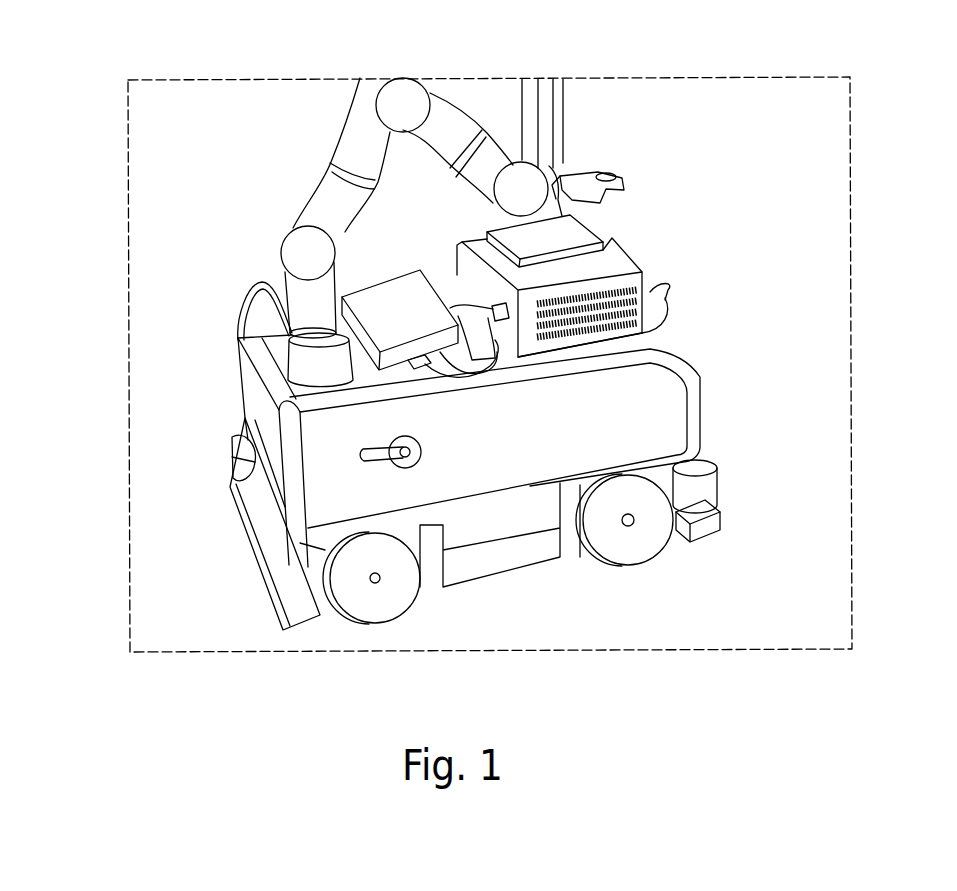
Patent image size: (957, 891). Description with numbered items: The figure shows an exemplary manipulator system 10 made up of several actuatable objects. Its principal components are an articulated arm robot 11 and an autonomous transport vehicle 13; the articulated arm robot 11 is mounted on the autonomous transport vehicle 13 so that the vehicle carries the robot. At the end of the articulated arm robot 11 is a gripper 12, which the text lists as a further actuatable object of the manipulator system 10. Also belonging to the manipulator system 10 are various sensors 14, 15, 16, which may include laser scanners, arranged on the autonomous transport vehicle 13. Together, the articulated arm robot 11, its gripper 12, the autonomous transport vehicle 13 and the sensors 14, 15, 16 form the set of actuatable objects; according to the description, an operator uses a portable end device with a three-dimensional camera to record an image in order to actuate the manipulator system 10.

The manipulator system 10 is at (178, 342).
The articulated arm robot 11 is at (358, 155).
The gripper 12 is at (578, 170).
The autonomous transport vehicle 13 is at (530, 455).
The sensor 14 is at (375, 466).
The sensor 15 is at (700, 492).
The sensor 16 is at (228, 440).